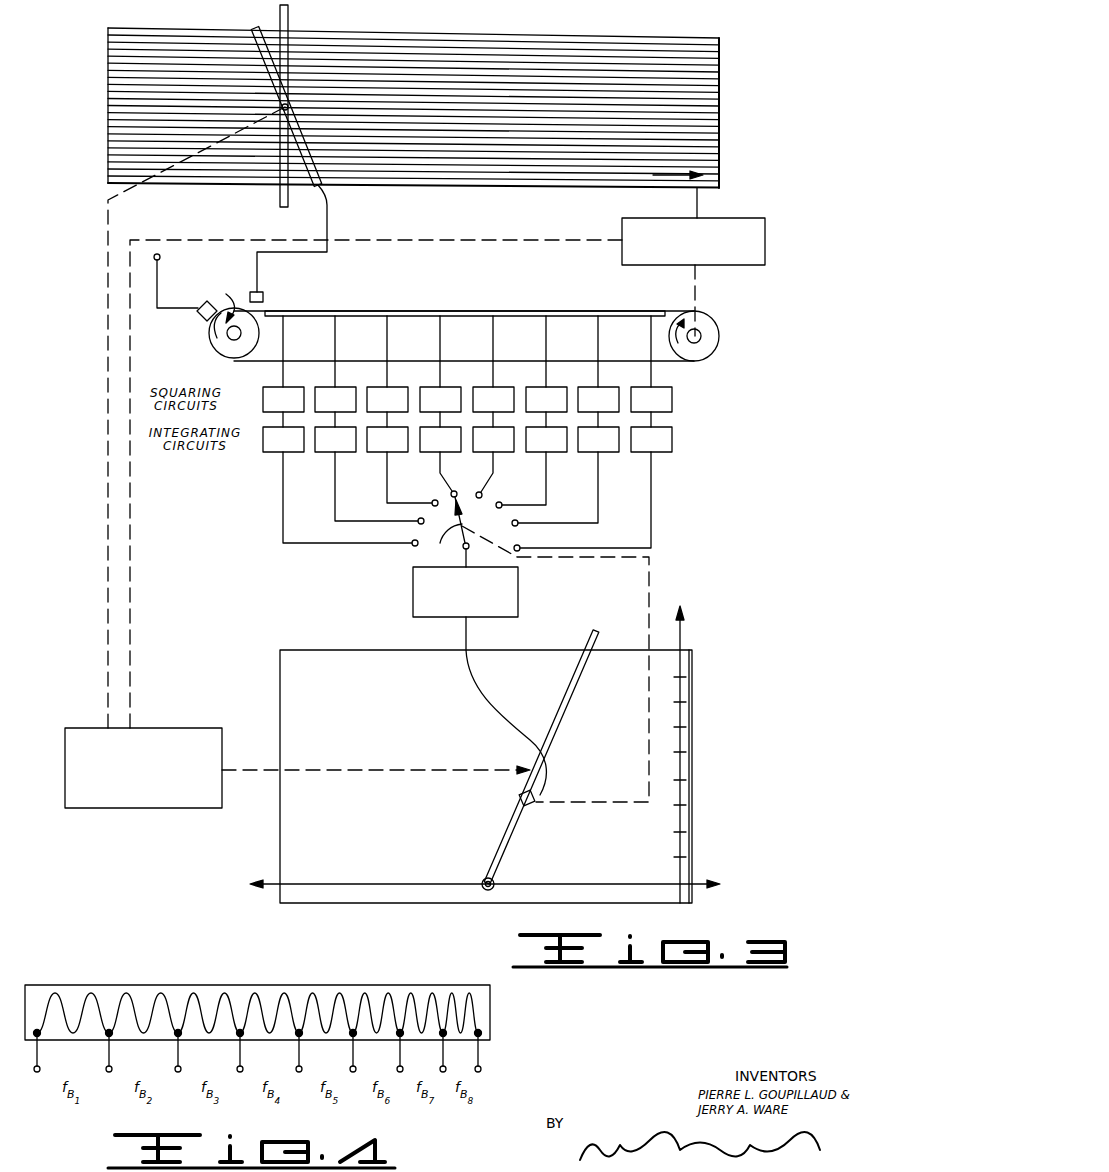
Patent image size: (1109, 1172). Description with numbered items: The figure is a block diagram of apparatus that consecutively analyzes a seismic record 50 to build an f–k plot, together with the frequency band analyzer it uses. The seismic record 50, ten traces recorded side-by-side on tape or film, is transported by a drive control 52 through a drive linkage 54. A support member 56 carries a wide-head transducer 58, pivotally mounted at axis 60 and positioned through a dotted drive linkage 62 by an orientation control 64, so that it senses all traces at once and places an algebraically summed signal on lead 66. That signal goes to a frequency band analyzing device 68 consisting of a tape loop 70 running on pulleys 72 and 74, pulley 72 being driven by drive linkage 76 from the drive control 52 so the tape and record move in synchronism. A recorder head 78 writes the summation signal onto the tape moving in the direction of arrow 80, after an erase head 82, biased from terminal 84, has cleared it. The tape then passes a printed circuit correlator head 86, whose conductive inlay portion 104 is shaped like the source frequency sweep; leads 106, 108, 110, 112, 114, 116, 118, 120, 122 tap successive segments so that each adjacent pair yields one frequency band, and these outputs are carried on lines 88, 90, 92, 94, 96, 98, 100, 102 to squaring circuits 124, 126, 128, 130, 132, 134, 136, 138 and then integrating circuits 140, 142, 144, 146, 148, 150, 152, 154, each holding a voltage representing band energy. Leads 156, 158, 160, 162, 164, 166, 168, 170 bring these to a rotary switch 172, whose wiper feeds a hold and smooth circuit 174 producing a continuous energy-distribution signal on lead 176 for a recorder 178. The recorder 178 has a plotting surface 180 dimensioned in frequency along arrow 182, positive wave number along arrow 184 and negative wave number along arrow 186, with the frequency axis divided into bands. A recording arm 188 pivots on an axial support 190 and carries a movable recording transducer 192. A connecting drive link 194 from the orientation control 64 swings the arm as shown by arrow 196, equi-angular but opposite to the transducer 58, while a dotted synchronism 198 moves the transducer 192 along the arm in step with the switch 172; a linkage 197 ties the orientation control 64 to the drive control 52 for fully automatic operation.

In FIG. 3, the seismic record 50 is at (442, 43).
In FIG. 3, the drive control 52 is at (767, 229).
In FIG. 3, the drive linkage 54 is at (701, 212).
In FIG. 3, the support member 56 is at (289, 18).
In FIG. 3, the wide-head transducer 58 is at (256, 28).
In FIG. 3, the axis 60 is at (290, 105).
In FIG. 3, the drive linkage 62 is at (131, 192).
In FIG. 3, the orientation control 64 is at (155, 728).
In FIG. 3, the lead 66 is at (330, 213).
In FIG. 3, the frequency band analyzing device 68 is at (450, 292).
In FIG. 3, the tape loop 70 is at (574, 311).
In FIG. 3, the pulley 72 is at (720, 338).
In FIG. 3, the pulley 74 is at (223, 347).
In FIG. 3, the drive linkage 76 is at (700, 297).
In FIG. 3, the recorder head 78 is at (264, 296).
In FIG. 3, the arrow 80 is at (223, 305).
In FIG. 3, the erase head 82 is at (200, 304).
In FIG. 3, the terminal 84 is at (161, 257).
In FIG. 3, the printed circuit correlator head 86 is at (430, 311).
In FIG. 4, the printed circuit correlator head 86 is at (110, 1000).
In FIG. 3, the lead 88 is at (284, 370).
In FIG. 3, the lead 90 is at (336, 370).
In FIG. 3, the lead 92 is at (388, 370).
In FIG. 3, the lead 94 is at (441, 370).
In FIG. 3, the lead 96 is at (494, 370).
In FIG. 3, the lead 98 is at (547, 370).
In FIG. 3, the lead 100 is at (599, 370).
In FIG. 3, the lead 102 is at (652, 370).
In FIG. 4, the conductive inlay portion 104 is at (56, 993).
In FIG. 4, the lead 106 is at (38, 1052).
In FIG. 4, the lead 108 is at (110, 1052).
In FIG. 4, the lead 110 is at (179, 1052).
In FIG. 4, the lead 112 is at (241, 1052).
In FIG. 4, the lead 114 is at (300, 1052).
In FIG. 4, the lead 116 is at (354, 1052).
In FIG. 4, the lead 118 is at (401, 1052).
In FIG. 4, the lead 120 is at (444, 1052).
In FIG. 4, the lead 122 is at (479, 1052).
In FIG. 3, the squaring circuit 124 is at (283, 399).
In FIG. 3, the squaring circuit 126 is at (335, 399).
In FIG. 3, the squaring circuit 128 is at (387, 399).
In FIG. 3, the squaring circuit 130 is at (440, 399).
In FIG. 3, the squaring circuit 132 is at (493, 399).
In FIG. 3, the squaring circuit 134 is at (546, 399).
In FIG. 3, the squaring circuit 136 is at (598, 399).
In FIG. 3, the squaring circuit 138 is at (651, 399).
In FIG. 3, the integrating circuit 140 is at (283, 439).
In FIG. 3, the integrating circuit 142 is at (335, 439).
In FIG. 3, the integrating circuit 144 is at (387, 439).
In FIG. 3, the integrating circuit 146 is at (440, 439).
In FIG. 3, the integrating circuit 148 is at (493, 439).
In FIG. 3, the integrating circuit 150 is at (546, 439).
In FIG. 3, the integrating circuit 152 is at (598, 439).
In FIG. 3, the integrating circuit 154 is at (651, 439).
In FIG. 3, the lead 156 is at (282, 527).
In FIG. 3, the lead 158 is at (334, 496).
In FIG. 3, the lead 160 is at (386, 482).
In FIG. 3, the lead 162 is at (440, 480).
In FIG. 3, the lead 164 is at (493, 478).
In FIG. 3, the lead 166 is at (546, 499).
In FIG. 3, the lead 168 is at (598, 506).
In FIG. 3, the lead 170 is at (651, 516).
In FIG. 3, the rotary switch 172 is at (442, 532).
In FIG. 3, the hold and smooth circuit 174 is at (519, 601).
In FIG. 3, the lead 176 is at (470, 643).
In FIG. 3, the recorder 178 is at (330, 637).
In FIG. 3, the plotting surface 180 is at (397, 827).
In FIG. 3, the arrow 182 is at (684, 647).
In FIG. 3, the arrow 184 is at (586, 882).
In FIG. 3, the arrow 186 is at (376, 886).
In FIG. 3, the recording arm 188 is at (569, 708).
In FIG. 3, the axial support 190 is at (486, 892).
In FIG. 3, the recording transducer 192 is at (529, 806).
In FIG. 3, the connecting drive link 194 is at (372, 770).
In FIG. 3, the arrow 196 is at (520, 765).
In FIG. 3, the linkage 197 is at (443, 240).
In FIG. 3, the dotted line 198 is at (652, 599).